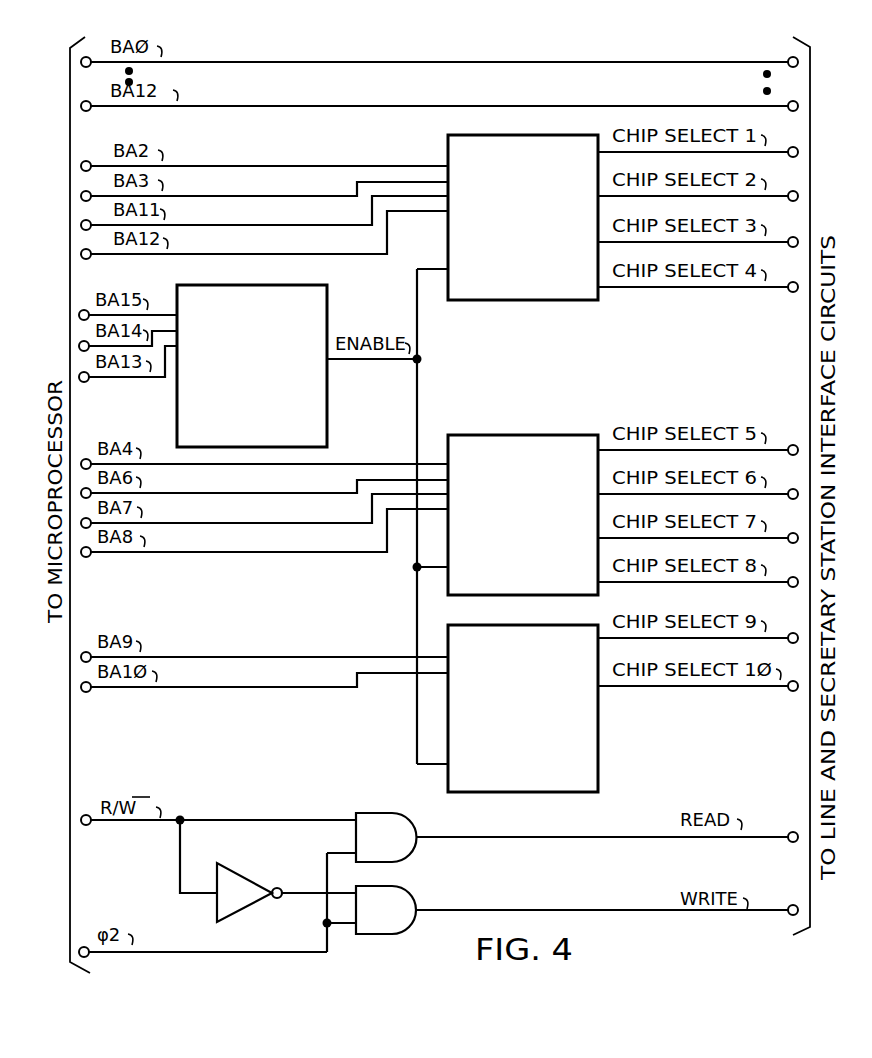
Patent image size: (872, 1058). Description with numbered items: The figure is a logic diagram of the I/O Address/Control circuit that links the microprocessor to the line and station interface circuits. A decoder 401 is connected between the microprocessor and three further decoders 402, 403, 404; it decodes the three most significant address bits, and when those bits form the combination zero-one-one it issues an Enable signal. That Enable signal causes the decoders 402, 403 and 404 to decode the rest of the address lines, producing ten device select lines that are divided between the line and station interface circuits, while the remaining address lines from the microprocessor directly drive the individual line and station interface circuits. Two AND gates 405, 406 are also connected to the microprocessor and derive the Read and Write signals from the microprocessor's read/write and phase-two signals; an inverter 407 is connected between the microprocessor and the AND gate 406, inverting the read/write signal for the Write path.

The decoder 401 is at (224, 404).
The decoder 402 is at (503, 245).
The decoder 403 is at (493, 555).
The decoder 404 is at (493, 744).
The AND gate 405 is at (413, 817).
The AND gate 406 is at (413, 892).
The inverter 407 is at (240, 876).